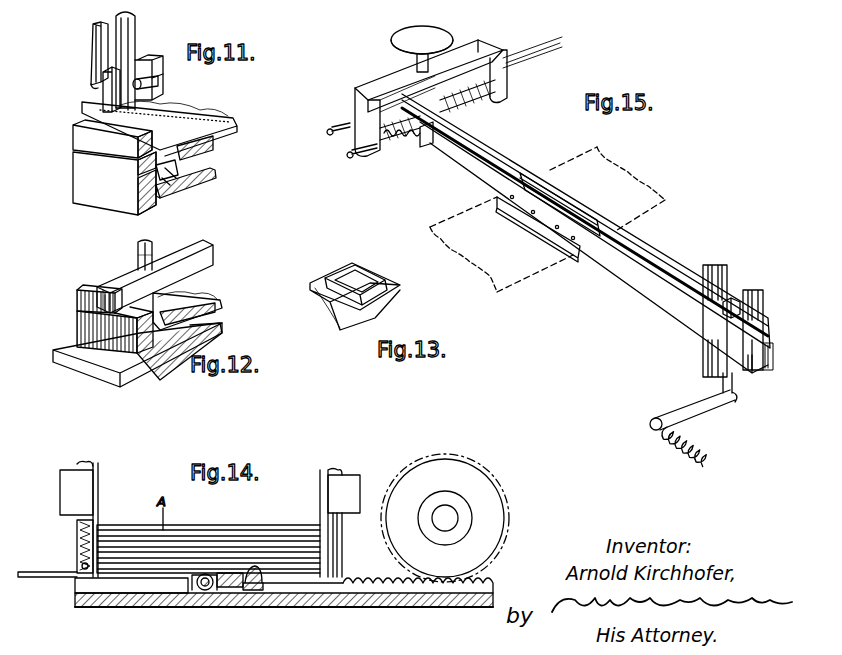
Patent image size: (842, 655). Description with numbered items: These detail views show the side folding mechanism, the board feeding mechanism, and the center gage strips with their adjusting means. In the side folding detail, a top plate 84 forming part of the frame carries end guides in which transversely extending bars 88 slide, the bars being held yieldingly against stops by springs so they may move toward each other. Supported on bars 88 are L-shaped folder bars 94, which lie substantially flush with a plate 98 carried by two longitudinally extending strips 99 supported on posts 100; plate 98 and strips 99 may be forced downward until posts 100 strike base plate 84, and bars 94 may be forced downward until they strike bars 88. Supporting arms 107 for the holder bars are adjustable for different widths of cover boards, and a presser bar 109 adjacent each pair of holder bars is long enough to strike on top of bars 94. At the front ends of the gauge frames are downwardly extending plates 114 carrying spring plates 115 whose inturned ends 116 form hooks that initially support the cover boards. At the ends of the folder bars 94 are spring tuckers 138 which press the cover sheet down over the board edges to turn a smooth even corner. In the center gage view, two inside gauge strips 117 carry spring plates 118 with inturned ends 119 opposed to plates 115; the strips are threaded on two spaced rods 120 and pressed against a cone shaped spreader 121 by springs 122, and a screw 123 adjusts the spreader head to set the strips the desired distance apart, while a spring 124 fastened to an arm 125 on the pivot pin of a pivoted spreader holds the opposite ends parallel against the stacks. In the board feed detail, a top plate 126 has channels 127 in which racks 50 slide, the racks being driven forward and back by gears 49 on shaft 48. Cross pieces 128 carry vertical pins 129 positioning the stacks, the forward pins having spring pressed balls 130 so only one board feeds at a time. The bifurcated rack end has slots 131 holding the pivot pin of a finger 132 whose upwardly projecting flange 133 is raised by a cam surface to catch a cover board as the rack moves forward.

In FIG. 11, the top plate 84 is at (195, 182).
In FIG. 12, the top plate 84 is at (142, 370).
In FIG. 11, the transversely extending bars 88 is at (72, 164).
In FIG. 12, the transversely extending bars 88 is at (76, 318).
In FIG. 11, the L-shaped folder bars 94 is at (72, 136).
In FIG. 12, the L-shaped folder bars 94 is at (76, 288).
In FIG. 13, the L-shaped folder bars 94 is at (340, 272).
In FIG. 11, the plate 98 is at (237, 130).
In FIG. 12, the plate 98 is at (222, 300).
In FIG. 11, the longitudinally extending strips 99 is at (213, 146).
In FIG. 12, the longitudinally extending strips 99 is at (222, 308).
In FIG. 11, the posts 100 is at (168, 182).
In FIG. 11, the supporting arms 107 is at (136, 43).
In FIG. 12, the presser bar 109 is at (118, 280).
In FIG. 11, the downwardly extending plates 114 is at (134, 27).
In FIG. 11, the spring plates 115 is at (92, 55).
In FIG. 11, the inturned ends 116 is at (90, 85).
In FIG. 13, the spring tuckers 138 is at (360, 277).
In FIG. 15, the inside gauge strips 117 is at (662, 278).
In FIG. 15, the spring plates 118 is at (522, 176).
In FIG. 15, the inturned ends 119 is at (577, 260).
In FIG. 15, the spaced rods 120 is at (550, 41).
In FIG. 15, the cone shaped spreader 121 is at (395, 78).
In FIG. 15, the springs 122 is at (408, 140).
In FIG. 15, the screw 123 is at (705, 328).
In FIG. 15, the spring 124 is at (672, 452).
In FIG. 15, the arm 125 is at (685, 410).
In FIG. 14, the top plate 126 is at (280, 608).
In FIG. 14, the channels 127 is at (159, 593).
In FIG. 14, the cross pieces 128 is at (80, 494).
In FIG. 14, the vertical pins 129 is at (99, 465).
In FIG. 14, the spring pressed balls 130 is at (80, 580).
In FIG. 14, the slots 131 is at (207, 592).
In FIG. 14, the finger 132 is at (228, 572).
In FIG. 14, the upwardly projecting flange 133 is at (263, 578).
In FIG. 14, the shaft 48 is at (446, 516).
In FIG. 14, the gears 49 is at (445, 518).
In FIG. 14, the racks 50 is at (403, 585).